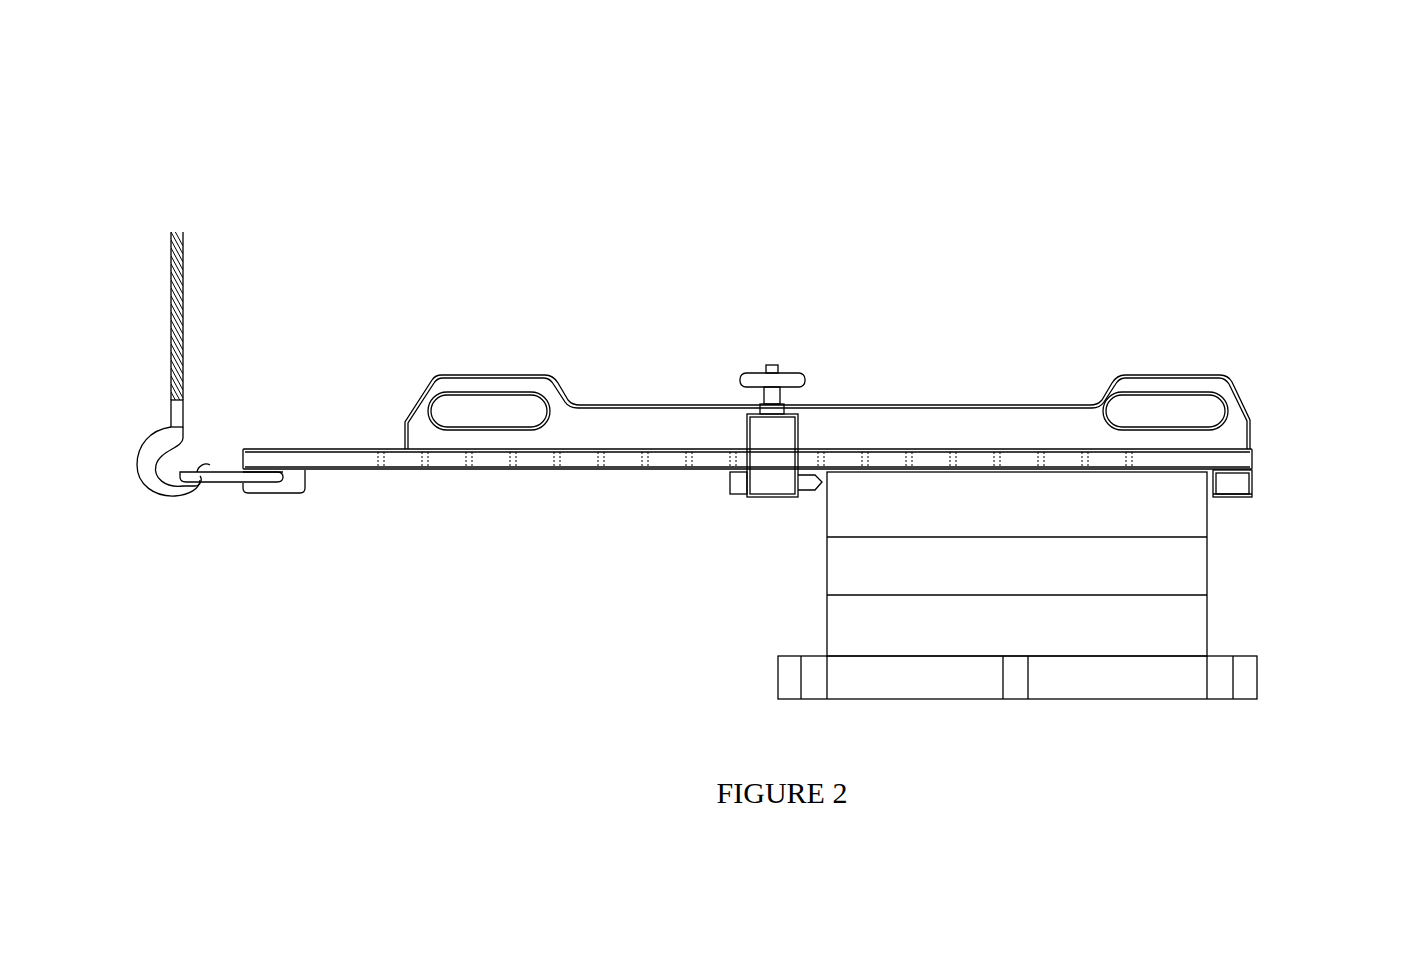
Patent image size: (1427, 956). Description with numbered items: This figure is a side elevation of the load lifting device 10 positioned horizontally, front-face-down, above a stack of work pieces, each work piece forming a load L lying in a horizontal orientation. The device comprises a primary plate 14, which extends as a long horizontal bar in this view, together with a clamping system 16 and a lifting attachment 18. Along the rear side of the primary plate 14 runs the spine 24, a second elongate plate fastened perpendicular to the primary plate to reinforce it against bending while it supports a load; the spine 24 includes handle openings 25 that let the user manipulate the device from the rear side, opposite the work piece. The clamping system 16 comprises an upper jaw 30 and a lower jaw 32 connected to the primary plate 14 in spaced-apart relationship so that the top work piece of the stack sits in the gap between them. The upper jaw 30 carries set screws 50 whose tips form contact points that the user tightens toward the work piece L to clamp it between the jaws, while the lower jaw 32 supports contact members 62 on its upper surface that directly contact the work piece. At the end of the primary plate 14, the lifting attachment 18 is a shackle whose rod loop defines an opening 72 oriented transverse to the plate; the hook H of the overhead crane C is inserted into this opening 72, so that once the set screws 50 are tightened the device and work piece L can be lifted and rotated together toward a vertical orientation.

The load lifting device 10 is at (1216, 164).
The primary plate 14 is at (624, 442).
The clamping system 16 is at (726, 469).
The lifting attachment 18 is at (291, 495).
The spine 24 is at (690, 435).
The handle openings 25 is at (487, 418).
The upper jaw 30 is at (769, 466).
The lower jaw 32 is at (1238, 487).
The set screws 50 is at (815, 488).
The contact members 62 is at (1212, 500).
The opening 72 is at (230, 485).
The overhead crane C is at (208, 312).
The hook H is at (183, 493).
The load L is at (993, 503).